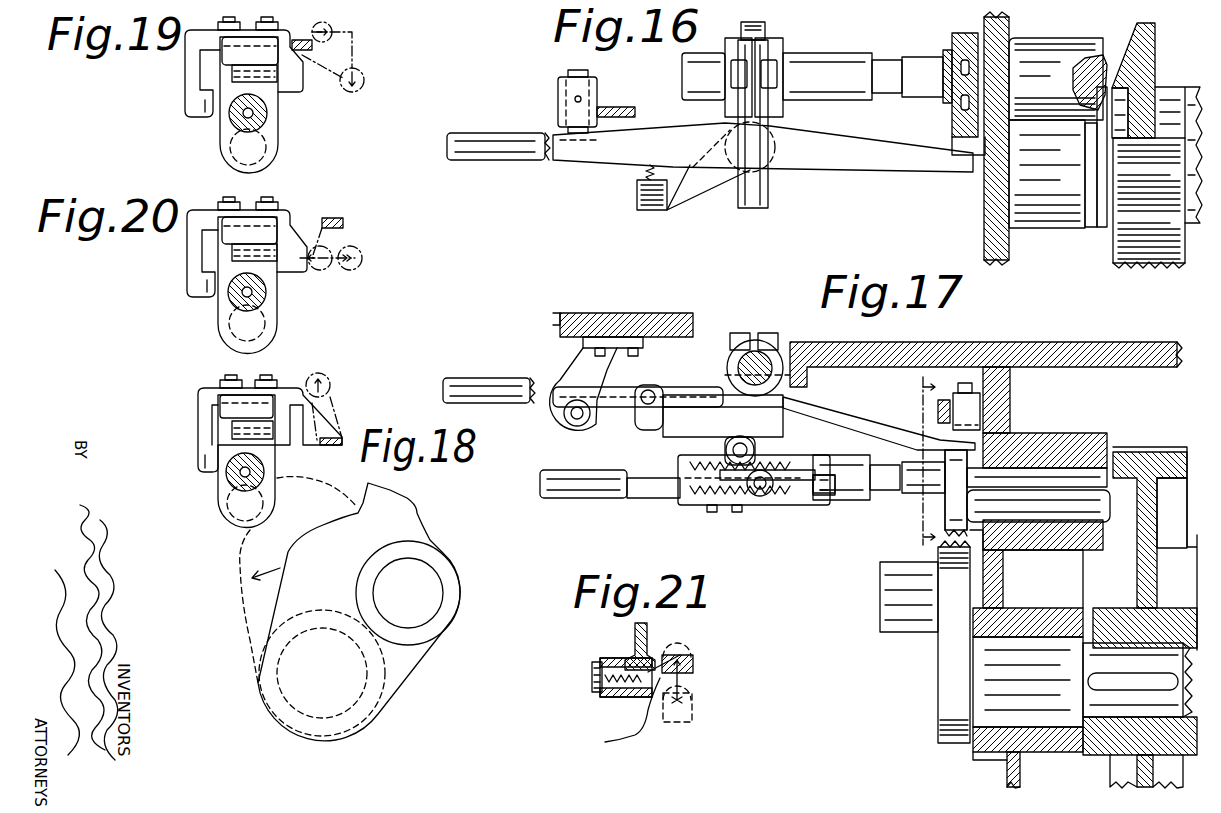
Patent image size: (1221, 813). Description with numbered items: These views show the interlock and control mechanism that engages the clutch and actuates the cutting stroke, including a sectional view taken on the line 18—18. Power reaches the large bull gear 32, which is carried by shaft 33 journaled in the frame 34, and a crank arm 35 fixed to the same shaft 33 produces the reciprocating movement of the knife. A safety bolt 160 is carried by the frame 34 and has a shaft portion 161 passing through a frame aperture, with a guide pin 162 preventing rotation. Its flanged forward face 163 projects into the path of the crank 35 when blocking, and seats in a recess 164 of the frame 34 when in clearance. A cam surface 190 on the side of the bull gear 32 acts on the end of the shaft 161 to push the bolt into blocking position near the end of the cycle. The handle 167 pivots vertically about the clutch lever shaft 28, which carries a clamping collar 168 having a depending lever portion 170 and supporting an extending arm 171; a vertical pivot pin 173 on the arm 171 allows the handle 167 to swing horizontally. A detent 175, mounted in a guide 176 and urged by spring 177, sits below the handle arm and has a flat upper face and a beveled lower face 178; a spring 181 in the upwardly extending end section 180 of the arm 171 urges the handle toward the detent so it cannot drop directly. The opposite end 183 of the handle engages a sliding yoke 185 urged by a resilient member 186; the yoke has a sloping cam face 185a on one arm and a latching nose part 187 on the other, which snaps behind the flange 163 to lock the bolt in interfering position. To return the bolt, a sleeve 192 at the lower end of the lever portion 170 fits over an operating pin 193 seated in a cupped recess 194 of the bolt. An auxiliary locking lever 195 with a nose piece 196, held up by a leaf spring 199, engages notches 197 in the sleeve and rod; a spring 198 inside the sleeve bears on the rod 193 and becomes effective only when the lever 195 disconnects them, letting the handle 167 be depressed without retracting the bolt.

In FIG. 17, the section line 18 is at (919, 457).
In FIG. 16, the clutch lever shaft 28 is at (768, 195).
In FIG. 17, the clutch lever shaft 28 is at (762, 350).
In FIG. 16, the bull gear 32 is at (1162, 265).
In FIG. 17, the bull gear 32 is at (1163, 450).
In FIG. 18, the shaft 33 is at (380, 698).
In FIG. 17, the shaft 33 is at (1045, 722).
In FIG. 16, the frame 34 is at (1005, 243).
In FIG. 17, the frame 34 is at (1040, 620).
In FIG. 18, the crank arm 35 is at (332, 531).
In FIG. 17, the crank arm 35 is at (945, 640).
In FIG. 19, the safety bolt 160 is at (256, 150).
In FIG. 20, the safety bolt 160 is at (258, 320).
In FIG. 18, the safety bolt 160 is at (245, 520).
In FIG. 17, the safety bolt 160 is at (975, 545).
In FIG. 19, the shaft portion 161 is at (332, 29).
In FIG. 16, the shaft portion 161 is at (1073, 78).
In FIG. 17, the shaft portion 161 is at (1052, 525).
In FIG. 17, the guide pin 162 is at (1055, 468).
In FIG. 19, the flanged forward face 163 is at (280, 144).
In FIG. 20, the flanged forward face 163 is at (222, 340).
In FIG. 18, the flanged forward face 163 is at (222, 508).
In FIG. 17, the flanged forward face 163 is at (948, 507).
In FIG. 17, the recess 164 is at (1008, 452).
In FIG. 20, the handle 167 is at (352, 270).
In FIG. 16, the handle 167 is at (490, 155).
In FIG. 17, the handle 167 is at (490, 365).
In FIG. 21, the handle 167 is at (690, 699).
In FIG. 16, the clamping collar 168 is at (770, 48).
In FIG. 17, the clamping collar 168 is at (740, 345).
In FIG. 17, the depending lever portion 170 is at (757, 450).
In FIG. 16, the extending arm 171 is at (690, 190).
In FIG. 17, the extending arm 171 is at (692, 405).
In FIG. 16, the pivot pin 173 is at (775, 158).
In FIG. 17, the pivot pin 173 is at (785, 400).
In FIG. 16, the detent 175 is at (596, 147).
In FIG. 17, the detent 175 is at (556, 400).
In FIG. 21, the detent 175 is at (618, 698).
In FIG. 16, the guide 176 is at (558, 105).
In FIG. 17, the guide 176 is at (576, 440).
In FIG. 21, the guide 176 is at (635, 630).
In FIG. 21, the spring 177 is at (592, 677).
In FIG. 21, the beveled lower face 178 is at (627, 716).
In FIG. 16, the end section 180 is at (637, 200).
In FIG. 17, the end section 180 is at (655, 385).
In FIG. 16, the spring 181 is at (646, 176).
In FIG. 17, the spring 181 is at (641, 390).
In FIG. 19, the opposite end 183 is at (303, 40).
In FIG. 20, the opposite end 183 is at (343, 223).
In FIG. 18, the opposite end 183 is at (333, 446).
In FIG. 16, the opposite end 183 is at (960, 172).
In FIG. 17, the opposite end 183 is at (938, 410).
In FIG. 19, the sliding yoke 185 is at (200, 68).
In FIG. 20, the sliding yoke 185 is at (202, 248).
In FIG. 18, the sliding yoke 185 is at (200, 414).
In FIG. 16, the sliding yoke 185 is at (953, 125).
In FIG. 17, the sliding yoke 185 is at (980, 410).
In FIG. 19, the sloping cam face 185a is at (303, 63).
In FIG. 20, the sloping cam face 185a is at (303, 240).
In FIG. 19, the resilient member 186 is at (236, 73).
In FIG. 20, the resilient member 186 is at (236, 252).
In FIG. 18, the resilient member 186 is at (273, 428).
In FIG. 19, the latching nose part 187 is at (205, 112).
In FIG. 20, the latching nose part 187 is at (212, 290).
In FIG. 18, the latching nose part 187 is at (212, 470).
In FIG. 17, the latching nose part 187 is at (945, 470).
In FIG. 16, the cam surface 190 is at (1157, 52).
In FIG. 17, the cam surface 190 is at (1120, 498).
In FIG. 16, the sleeve 192 is at (847, 54).
In FIG. 17, the sleeve 192 is at (705, 470).
In FIG. 19, the operating pin 193 is at (266, 117).
In FIG. 20, the operating pin 193 is at (266, 294).
In FIG. 18, the operating pin 193 is at (264, 483).
In FIG. 16, the operating pin 193 is at (882, 65).
In FIG. 17, the operating pin 193 is at (872, 465).
In FIG. 16, the cupped recess 194 is at (942, 32).
In FIG. 17, the cupped recess 194 is at (907, 490).
In FIG. 17, the auxiliary locking lever 195 is at (660, 492).
In FIG. 17, the nose piece 196 is at (826, 500).
In FIG. 17, the notches 197 is at (825, 495).
In FIG. 17, the spring 198 is at (700, 506).
In FIG. 17, the leaf spring 199 is at (760, 512).